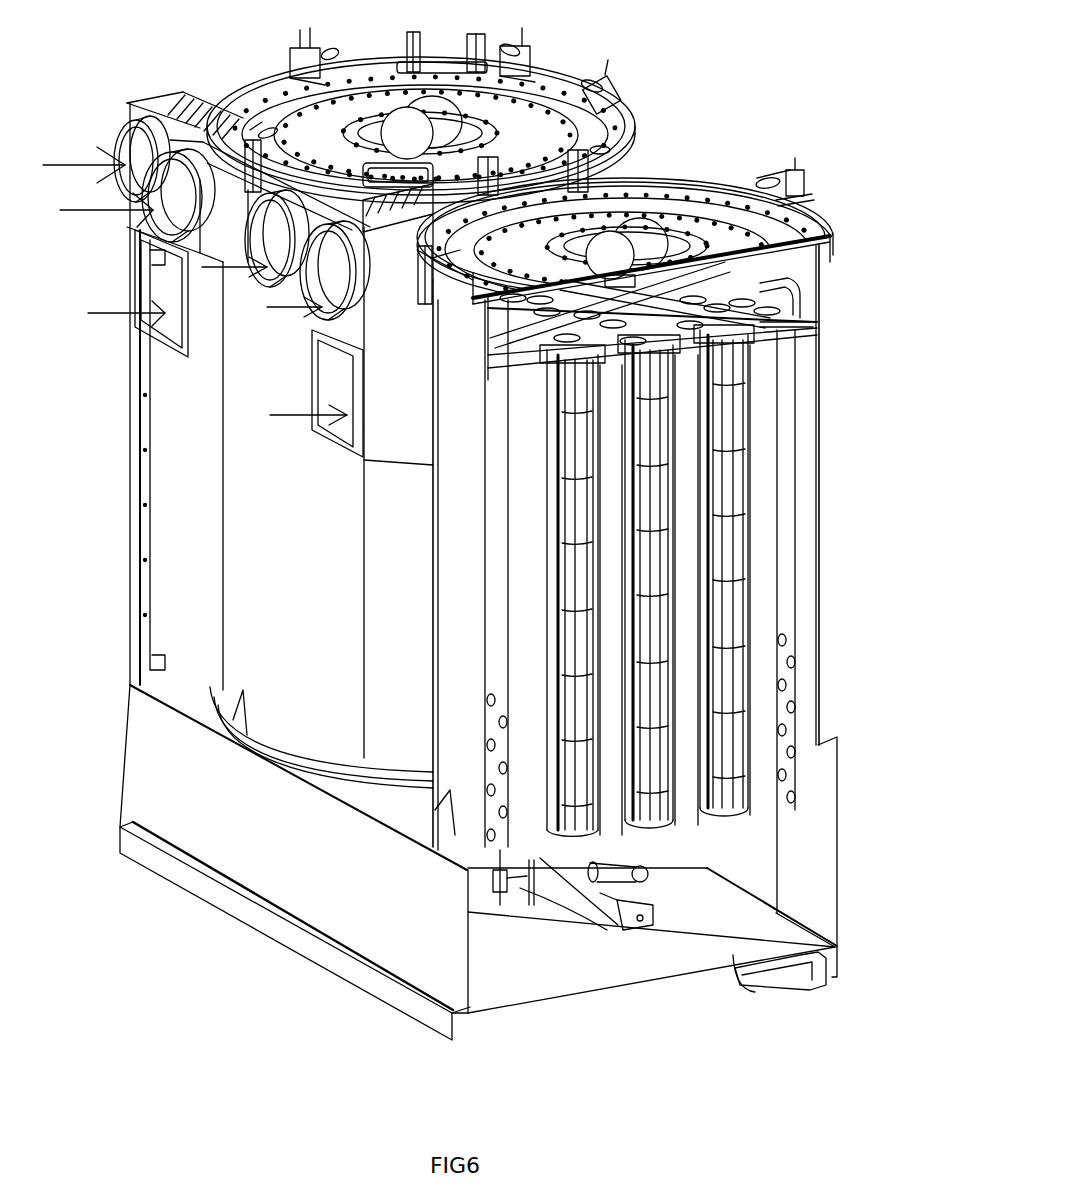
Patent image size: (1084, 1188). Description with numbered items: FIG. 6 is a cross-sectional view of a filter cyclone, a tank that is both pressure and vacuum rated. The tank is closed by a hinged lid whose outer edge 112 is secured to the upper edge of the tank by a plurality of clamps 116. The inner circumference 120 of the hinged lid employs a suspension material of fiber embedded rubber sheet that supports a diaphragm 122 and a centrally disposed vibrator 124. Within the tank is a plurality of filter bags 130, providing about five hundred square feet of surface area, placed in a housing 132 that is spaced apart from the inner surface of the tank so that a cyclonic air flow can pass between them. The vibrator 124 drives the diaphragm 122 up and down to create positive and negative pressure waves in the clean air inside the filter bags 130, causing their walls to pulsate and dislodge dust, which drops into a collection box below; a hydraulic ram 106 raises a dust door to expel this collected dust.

The hydraulic ram 106 is at (655, 872).
The outer edge 112 is at (712, 546).
The clamps 116 is at (820, 155).
The inner circumference 120 is at (780, 233).
The diaphragm 122 is at (642, 176).
The vibrator 124 is at (632, 230).
The filter bags 130 is at (724, 619).
The housing 132 is at (724, 315).